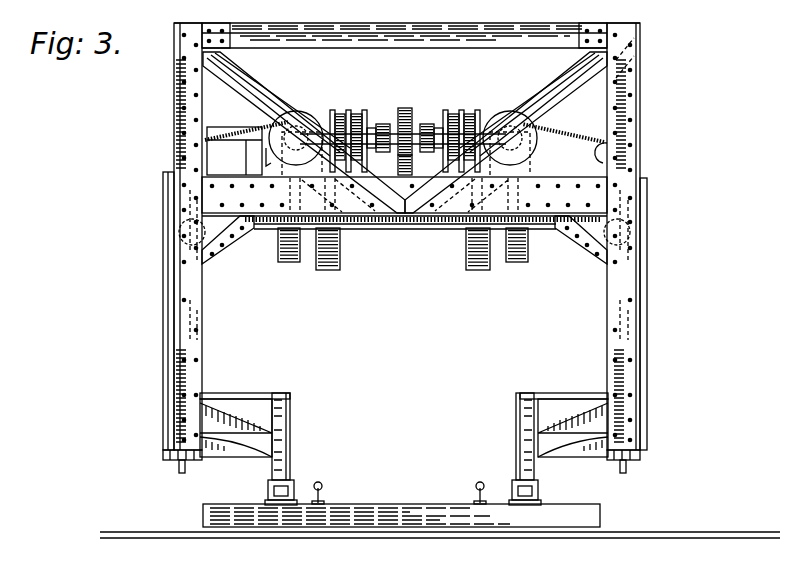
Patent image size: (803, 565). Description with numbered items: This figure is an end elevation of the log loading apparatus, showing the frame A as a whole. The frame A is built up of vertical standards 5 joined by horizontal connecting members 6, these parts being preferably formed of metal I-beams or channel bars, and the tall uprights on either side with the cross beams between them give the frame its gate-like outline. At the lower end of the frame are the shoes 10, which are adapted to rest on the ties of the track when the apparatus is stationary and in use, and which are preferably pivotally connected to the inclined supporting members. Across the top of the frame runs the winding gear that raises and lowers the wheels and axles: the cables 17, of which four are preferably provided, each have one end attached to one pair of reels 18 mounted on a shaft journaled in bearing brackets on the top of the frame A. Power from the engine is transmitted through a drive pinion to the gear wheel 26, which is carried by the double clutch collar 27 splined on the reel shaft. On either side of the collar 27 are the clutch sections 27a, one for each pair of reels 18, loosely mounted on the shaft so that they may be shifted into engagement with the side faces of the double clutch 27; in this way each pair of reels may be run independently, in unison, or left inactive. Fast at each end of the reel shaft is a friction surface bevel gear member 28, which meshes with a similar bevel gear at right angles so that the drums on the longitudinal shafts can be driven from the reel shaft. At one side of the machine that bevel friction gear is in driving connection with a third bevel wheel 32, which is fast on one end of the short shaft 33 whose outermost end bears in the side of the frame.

The vertical standard 5 is at (637, 164).
The frame A is at (417, 143).
The horizontal connecting member 6 is at (388, 222).
The shoe 10 is at (268, 498).
The cable 17 is at (590, 138).
The reel 18 is at (354, 112).
The gear wheel 26 is at (406, 107).
The double clutch collar 27 is at (398, 164).
The clutch section 27a is at (383, 123).
The friction surface bevel gear member 28 is at (326, 121).
The third bevel wheel 32 is at (272, 161).
The short shaft 33 is at (243, 136).